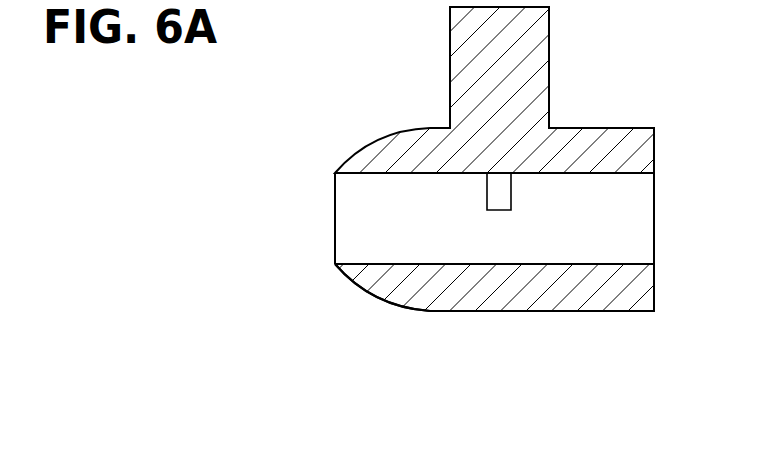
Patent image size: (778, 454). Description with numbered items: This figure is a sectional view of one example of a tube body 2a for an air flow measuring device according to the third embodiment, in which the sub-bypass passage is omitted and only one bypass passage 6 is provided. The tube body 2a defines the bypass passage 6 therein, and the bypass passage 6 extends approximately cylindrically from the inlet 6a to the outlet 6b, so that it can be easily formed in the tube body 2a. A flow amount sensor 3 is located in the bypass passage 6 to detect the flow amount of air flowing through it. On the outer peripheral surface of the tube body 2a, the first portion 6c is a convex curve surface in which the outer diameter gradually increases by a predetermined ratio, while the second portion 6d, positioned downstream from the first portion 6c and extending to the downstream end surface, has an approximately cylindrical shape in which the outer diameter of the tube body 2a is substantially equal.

The bypass passage 6 is at (423, 233).
The inlet 6a is at (337, 248).
The outlet 6b is at (640, 192).
The first portion 6c is at (360, 288).
The second portion 6d is at (617, 311).
The flow amount sensor 3 is at (502, 202).
The tube body 2a is at (552, 300).